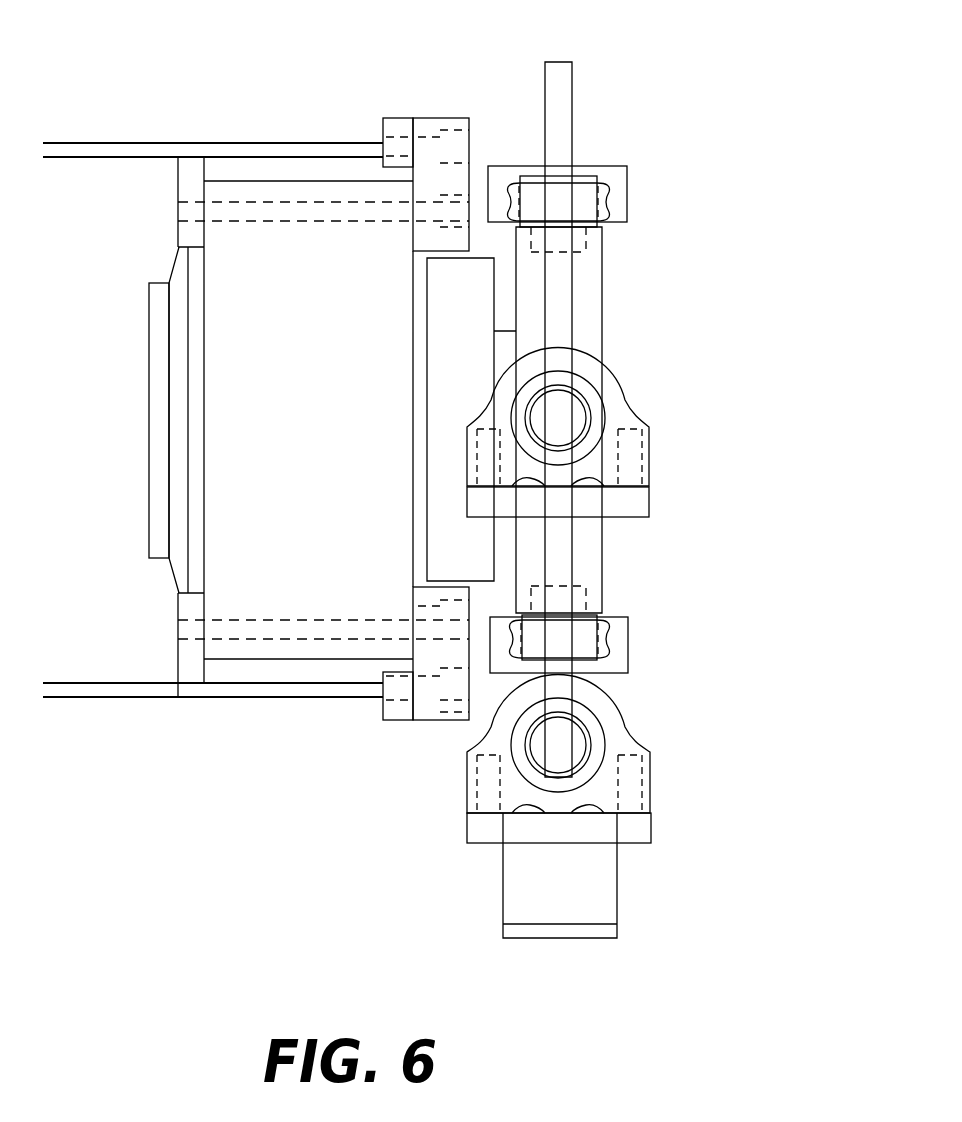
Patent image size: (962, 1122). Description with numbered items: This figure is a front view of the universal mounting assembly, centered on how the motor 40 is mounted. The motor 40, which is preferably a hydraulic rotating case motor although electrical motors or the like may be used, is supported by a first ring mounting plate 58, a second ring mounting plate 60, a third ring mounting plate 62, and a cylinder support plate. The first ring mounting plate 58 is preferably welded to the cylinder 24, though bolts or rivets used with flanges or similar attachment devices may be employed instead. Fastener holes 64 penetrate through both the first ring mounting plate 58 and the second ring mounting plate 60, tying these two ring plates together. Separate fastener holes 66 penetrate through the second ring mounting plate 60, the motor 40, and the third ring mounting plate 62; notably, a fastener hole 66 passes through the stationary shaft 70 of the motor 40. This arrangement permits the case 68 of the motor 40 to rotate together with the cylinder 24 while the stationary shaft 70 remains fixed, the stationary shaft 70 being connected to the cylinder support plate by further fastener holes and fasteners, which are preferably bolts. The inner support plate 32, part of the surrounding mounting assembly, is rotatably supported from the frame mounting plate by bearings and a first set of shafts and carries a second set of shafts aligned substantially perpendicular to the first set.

The cylinder 24 is at (263, 148).
The inner support plate 32 is at (558, 90).
The motor 40 is at (238, 296).
The first ring mounting plate 58 is at (393, 118).
The second ring mounting plate 60 is at (432, 118).
The third ring mounting plate 62 is at (193, 672).
The fastener holes 64 is at (423, 700).
The fastener holes 66 is at (333, 638).
The case 68 is at (235, 168).
The stationary shaft 70 is at (247, 545).